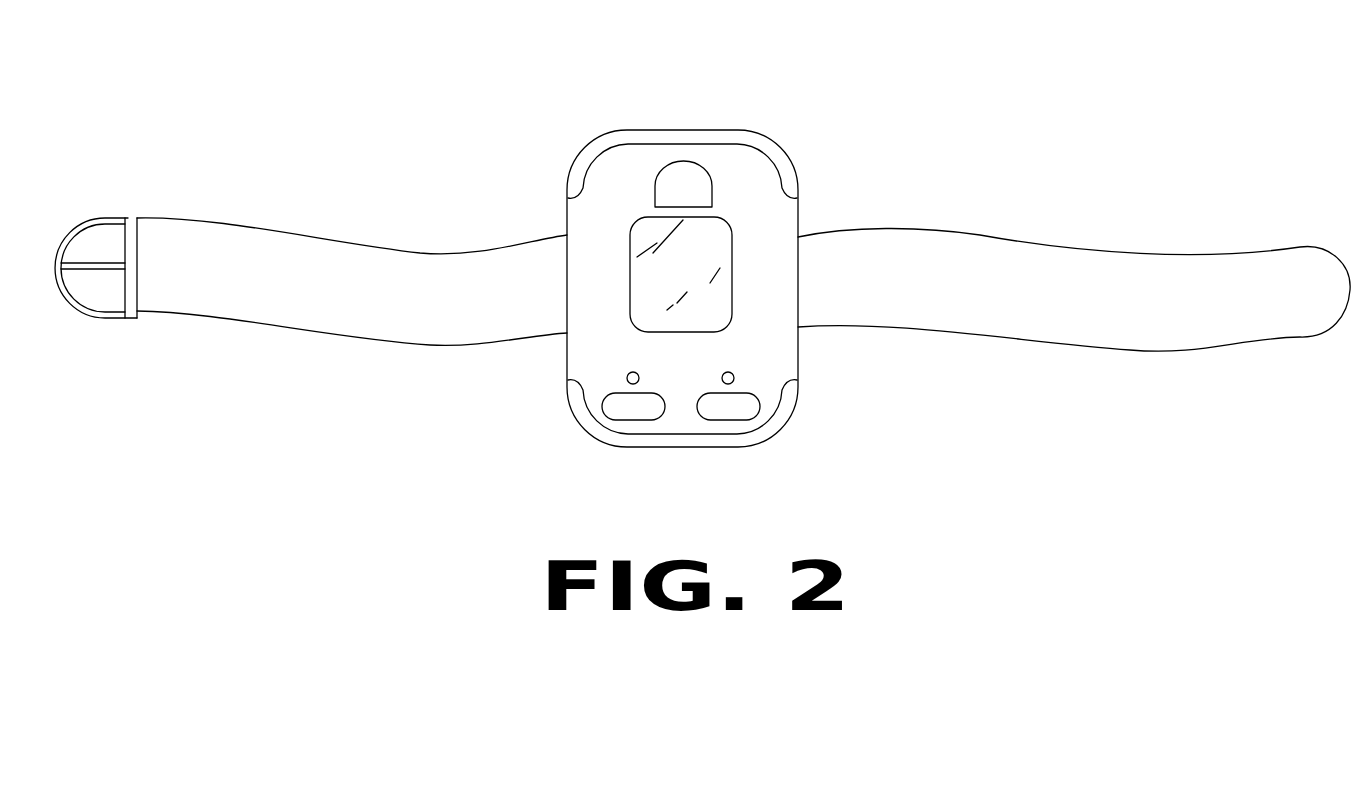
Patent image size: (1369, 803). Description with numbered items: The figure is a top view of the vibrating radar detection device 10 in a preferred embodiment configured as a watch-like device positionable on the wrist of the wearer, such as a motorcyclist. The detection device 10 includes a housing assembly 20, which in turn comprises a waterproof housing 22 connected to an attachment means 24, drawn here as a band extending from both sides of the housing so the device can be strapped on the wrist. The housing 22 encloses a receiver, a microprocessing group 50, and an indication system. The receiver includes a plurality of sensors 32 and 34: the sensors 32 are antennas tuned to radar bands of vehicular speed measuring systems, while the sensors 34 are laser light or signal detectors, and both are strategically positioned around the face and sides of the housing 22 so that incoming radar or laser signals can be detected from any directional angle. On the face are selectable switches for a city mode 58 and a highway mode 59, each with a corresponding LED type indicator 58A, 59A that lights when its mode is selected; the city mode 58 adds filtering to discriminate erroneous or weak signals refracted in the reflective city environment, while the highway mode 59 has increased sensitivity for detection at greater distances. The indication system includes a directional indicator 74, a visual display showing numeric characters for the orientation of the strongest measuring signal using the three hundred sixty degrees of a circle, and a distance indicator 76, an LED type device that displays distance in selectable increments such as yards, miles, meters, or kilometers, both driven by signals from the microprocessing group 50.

The detection device 10 is at (1050, 167).
The housing assembly 20 is at (538, 215).
The housing 22 is at (798, 228).
The attachment means 24 is at (1087, 265).
The sensors 32 is at (625, 137).
The sensors 34 is at (645, 140).
The microprocessing group 50 is at (583, 135).
The city mode switch 58 is at (603, 408).
The LED type indicator 58A is at (628, 374).
The highway mode switch 59 is at (757, 415).
The LED type indicator 59A is at (734, 374).
The directional indicator 74 is at (712, 188).
The distance indicator 76 is at (736, 283).